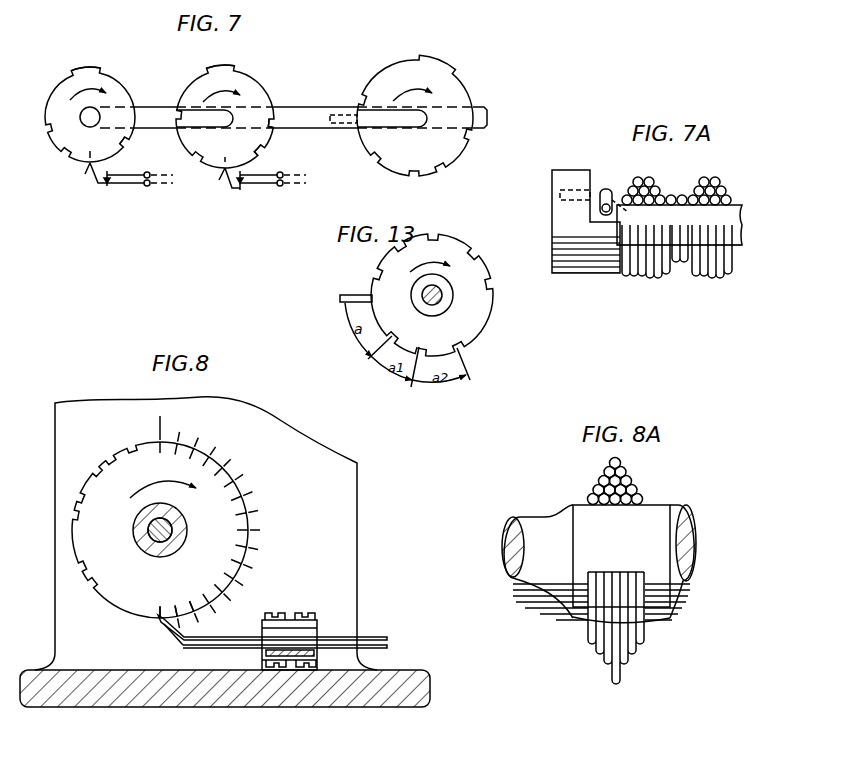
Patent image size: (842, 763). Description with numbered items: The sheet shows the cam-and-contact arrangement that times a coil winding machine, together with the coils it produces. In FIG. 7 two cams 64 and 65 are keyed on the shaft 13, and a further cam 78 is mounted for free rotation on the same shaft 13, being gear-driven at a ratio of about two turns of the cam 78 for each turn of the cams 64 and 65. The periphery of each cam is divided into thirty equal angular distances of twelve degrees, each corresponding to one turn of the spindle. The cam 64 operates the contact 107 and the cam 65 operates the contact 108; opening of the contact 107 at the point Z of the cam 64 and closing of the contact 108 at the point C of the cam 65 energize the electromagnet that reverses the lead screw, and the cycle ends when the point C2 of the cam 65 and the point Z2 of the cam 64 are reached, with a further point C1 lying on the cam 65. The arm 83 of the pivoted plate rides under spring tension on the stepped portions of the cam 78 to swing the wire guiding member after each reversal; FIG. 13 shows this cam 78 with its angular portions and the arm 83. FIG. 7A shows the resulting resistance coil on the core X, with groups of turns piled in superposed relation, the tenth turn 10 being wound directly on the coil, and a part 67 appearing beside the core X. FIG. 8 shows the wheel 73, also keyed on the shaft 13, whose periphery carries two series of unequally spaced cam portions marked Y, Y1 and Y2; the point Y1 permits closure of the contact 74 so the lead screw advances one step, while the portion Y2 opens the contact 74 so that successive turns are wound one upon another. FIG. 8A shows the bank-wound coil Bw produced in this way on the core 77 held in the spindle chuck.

In FIG. 7, the cam 64 is at (65, 92).
In FIG. 7, the point of cam 64 Z2 is at (104, 67).
In FIG. 7, the point of cam 64 Z is at (127, 147).
In FIG. 7, the shaft 13 is at (155, 109).
In FIG. 13, the shaft 13 is at (432, 305).
In FIG. 8, the shaft 13 is at (148, 531).
In FIG. 7, the arm of plate 83 is at (342, 115).
In FIG. 13, the arm of plate 83 is at (348, 295).
In FIG. 7, the cam 65 is at (193, 87).
In FIG. 7, the point of cam 65 C2 is at (236, 67).
In FIG. 7, the cam notch of disc 65 C1 is at (271, 126).
In FIG. 7, the point of cam 65 C is at (258, 150).
In FIG. 7, the cam 78 is at (448, 75).
In FIG. 13, the cam 78 is at (478, 309).
In FIG. 7, the contact 107 is at (113, 186).
In FIG. 7, the contact 108 is at (247, 191).
In FIG. 7A, the block with pin 67 is at (575, 180).
In FIG. 7A, the core X is at (730, 212).
In FIG. 8, the wheel 73 is at (138, 462).
In FIG. 8, the wire turn No. 10 is at (237, 698).
In FIG. 8, the contact 74 is at (200, 649).
In FIG. 8, the scale position Y is at (176, 612).
In FIG. 8, the point of cam 73 Y1 is at (205, 606).
In FIG. 8, the portion of cam 73 Y2 is at (240, 598).
In FIG. 8A, the core 77 is at (663, 513).
In FIG. 8A, the coin stack Bw is at (599, 484).